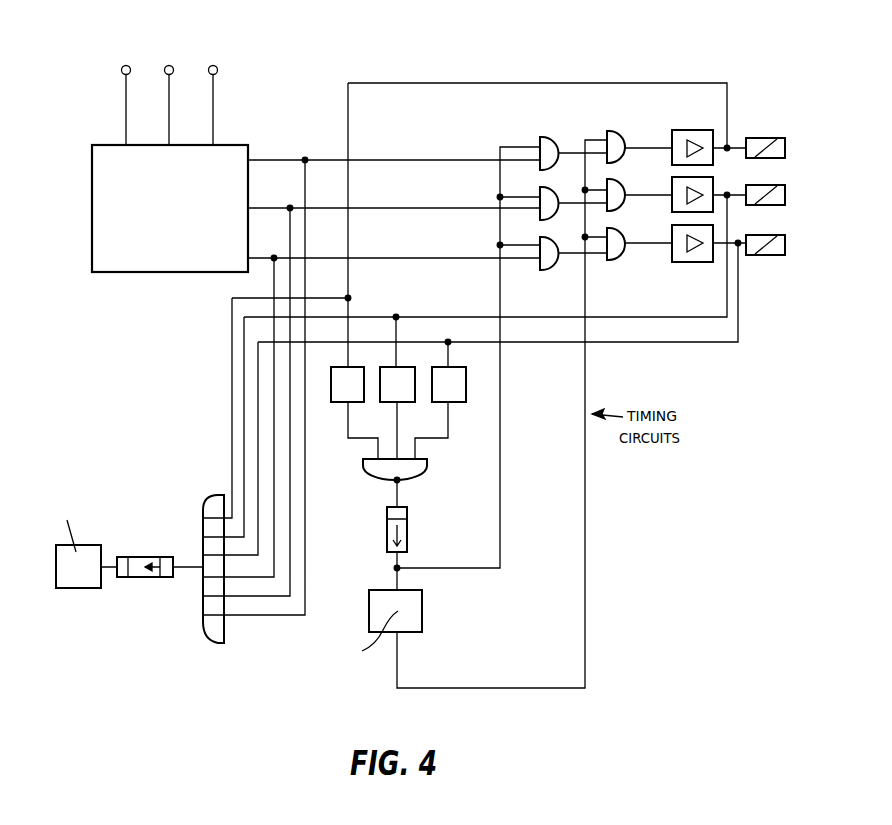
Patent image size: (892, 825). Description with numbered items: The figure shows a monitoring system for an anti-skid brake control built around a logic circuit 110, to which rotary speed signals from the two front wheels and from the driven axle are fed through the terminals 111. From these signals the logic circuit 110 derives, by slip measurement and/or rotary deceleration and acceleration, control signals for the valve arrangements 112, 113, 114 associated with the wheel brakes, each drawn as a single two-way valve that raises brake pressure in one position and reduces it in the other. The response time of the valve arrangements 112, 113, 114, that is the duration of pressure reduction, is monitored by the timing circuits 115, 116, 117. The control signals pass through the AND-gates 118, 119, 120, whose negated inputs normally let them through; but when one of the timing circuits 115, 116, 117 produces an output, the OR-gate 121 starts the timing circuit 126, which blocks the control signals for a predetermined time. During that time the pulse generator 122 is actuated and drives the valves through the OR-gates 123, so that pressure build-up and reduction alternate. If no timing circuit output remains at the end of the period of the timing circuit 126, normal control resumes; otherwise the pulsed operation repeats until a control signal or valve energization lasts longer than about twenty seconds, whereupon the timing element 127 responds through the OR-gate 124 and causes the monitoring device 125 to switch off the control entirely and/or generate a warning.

The logic circuit 110 is at (155, 258).
The terminals 111 is at (210, 65).
The valve arrangement 112 is at (755, 137).
The valve arrangement 113 is at (770, 205).
The valve arrangement 114 is at (770, 256).
The timing circuit 115 is at (340, 393).
The timing circuit 116 is at (403, 393).
The timing circuit 117 is at (452, 389).
The AND-gate 118 is at (552, 136).
The AND-gate 119 is at (556, 196).
The AND-gate 120 is at (552, 262).
The OR-gate 121 is at (427, 464).
The pulse generator 122 is at (413, 608).
The OR-gate 123 is at (622, 157).
The OR-gate 124 is at (210, 633).
The monitoring device 125 is at (83, 578).
The timing circuit 126 is at (408, 527).
The timing element 127 is at (145, 579).